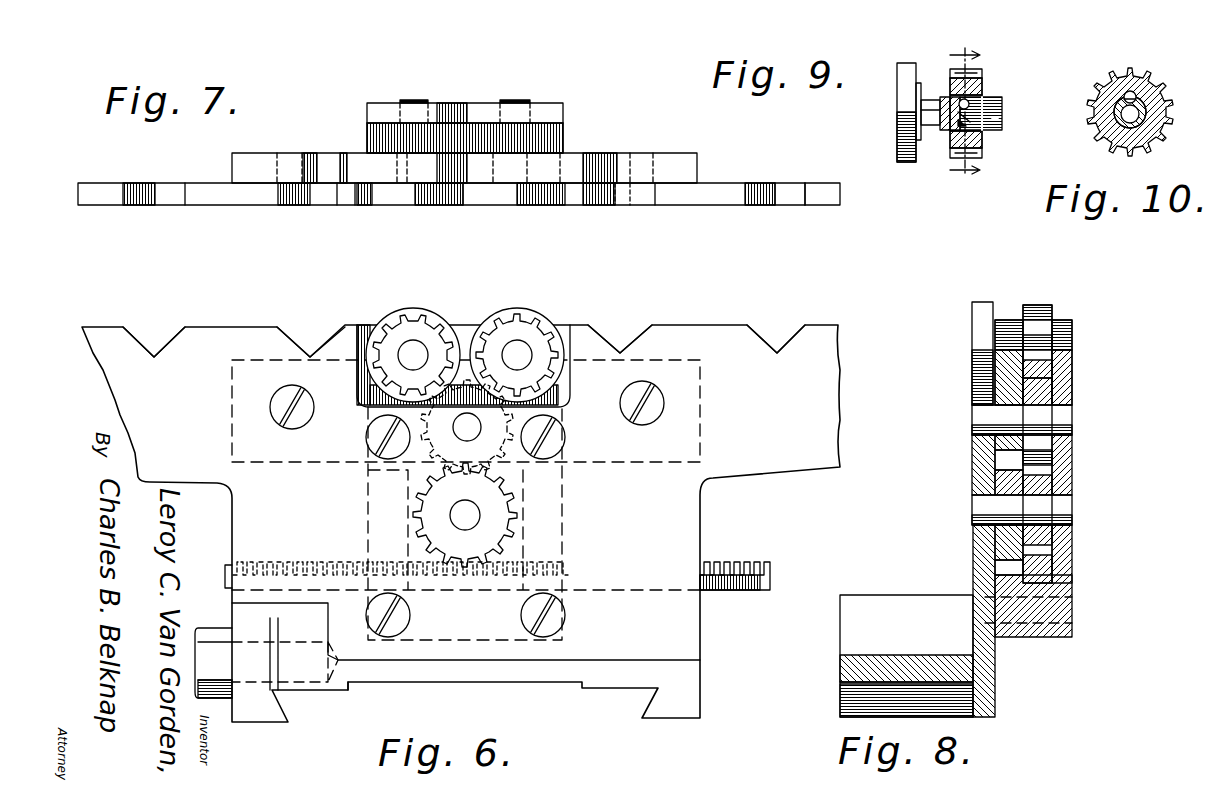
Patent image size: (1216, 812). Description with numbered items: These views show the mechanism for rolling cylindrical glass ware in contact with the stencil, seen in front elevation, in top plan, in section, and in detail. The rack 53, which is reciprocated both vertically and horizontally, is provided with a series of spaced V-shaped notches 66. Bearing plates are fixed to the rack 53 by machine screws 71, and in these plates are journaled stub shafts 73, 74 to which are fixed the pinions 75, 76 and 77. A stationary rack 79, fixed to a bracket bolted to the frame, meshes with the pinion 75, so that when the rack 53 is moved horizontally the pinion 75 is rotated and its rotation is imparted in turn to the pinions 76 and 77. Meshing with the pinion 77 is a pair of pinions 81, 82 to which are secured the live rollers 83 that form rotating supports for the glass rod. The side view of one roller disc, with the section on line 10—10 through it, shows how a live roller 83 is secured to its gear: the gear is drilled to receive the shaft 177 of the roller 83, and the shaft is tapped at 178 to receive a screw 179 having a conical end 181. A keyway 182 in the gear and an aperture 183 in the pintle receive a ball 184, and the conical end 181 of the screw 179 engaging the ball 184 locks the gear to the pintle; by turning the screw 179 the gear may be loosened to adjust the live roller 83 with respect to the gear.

In FIG. 7, the rack 53 is at (826, 197).
In FIG. 8, the rack 53 is at (975, 565).
In FIG. 6, the rack 53 is at (833, 353).
In FIG. 7, the V-shaped notches 66 is at (793, 197).
In FIG. 6, the V-shaped notches 66 is at (150, 342).
In FIG. 6, the machine screws 71 is at (560, 433).
In FIG. 8, the stub shaft 73 is at (1063, 507).
In FIG. 8, the stub shaft 74 is at (985, 419).
In FIG. 8, the pinion 75 is at (993, 543).
In FIG. 6, the pinion 75 is at (518, 517).
In FIG. 8, the pinion 76 is at (1073, 537).
In FIG. 6, the pinion 76 is at (412, 528).
In FIG. 8, the pinion 77 is at (1040, 456).
In FIG. 6, the pinion 77 is at (412, 470).
In FIG. 8, the stationary rack 79 is at (1073, 577).
In FIG. 6, the stationary rack 79 is at (800, 570).
In FIG. 7, the pinion 81 is at (565, 146).
In FIG. 9, the pinion 81 is at (966, 113).
In FIG. 10, the pinion 81 is at (1150, 100).
In FIG. 8, the pinion 81 is at (1053, 312).
In FIG. 6, the pinion 81 is at (553, 312).
In FIG. 7, the pinion 82 is at (367, 131).
In FIG. 6, the pinion 82 is at (397, 314).
In FIG. 7, the live roller 83 is at (472, 204).
In FIG. 9, the live roller 83 is at (905, 128).
In FIG. 8, the live roller 83 is at (982, 312).
In FIG. 6, the live roller 83 is at (488, 316).
In FIG. 9, the section line 10— 10 is at (967, 111).
In FIG. 9, the shaft 177 is at (926, 98).
In FIG. 9, the tapped portion 178 is at (990, 128).
In FIG. 10, the tapped portion 178 is at (1120, 125).
In FIG. 9, the screw 179 is at (1003, 111).
In FIG. 10, the screw 179 is at (1146, 128).
In FIG. 9, the conical end 181 is at (968, 97).
In FIG. 9, the keyway 182 is at (970, 102).
In FIG. 10, the aperture 183 is at (1122, 98).
In FIG. 10, the ball 184 is at (1134, 95).